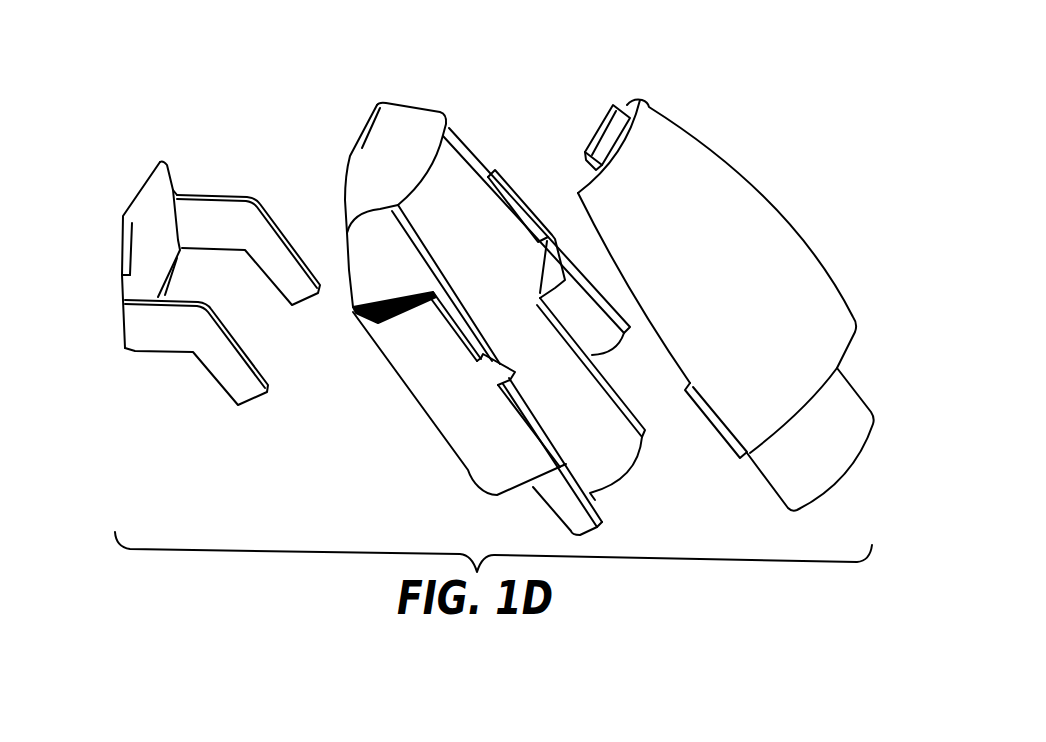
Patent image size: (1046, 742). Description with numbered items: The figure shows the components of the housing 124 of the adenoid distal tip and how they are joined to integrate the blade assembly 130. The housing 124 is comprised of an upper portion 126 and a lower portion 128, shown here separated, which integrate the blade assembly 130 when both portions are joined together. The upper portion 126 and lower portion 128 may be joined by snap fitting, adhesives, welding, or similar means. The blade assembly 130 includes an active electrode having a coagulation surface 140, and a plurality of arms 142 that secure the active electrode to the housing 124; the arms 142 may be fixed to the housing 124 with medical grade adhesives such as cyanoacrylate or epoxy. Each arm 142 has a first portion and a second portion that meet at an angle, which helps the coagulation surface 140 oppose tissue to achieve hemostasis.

The housing 124 is at (471, 290).
The upper portion 126 is at (762, 215).
The lower portion 128 is at (470, 443).
The blade assembly 130 is at (186, 259).
The coagulation surface 140 is at (121, 255).
The arms 142 is at (243, 225).